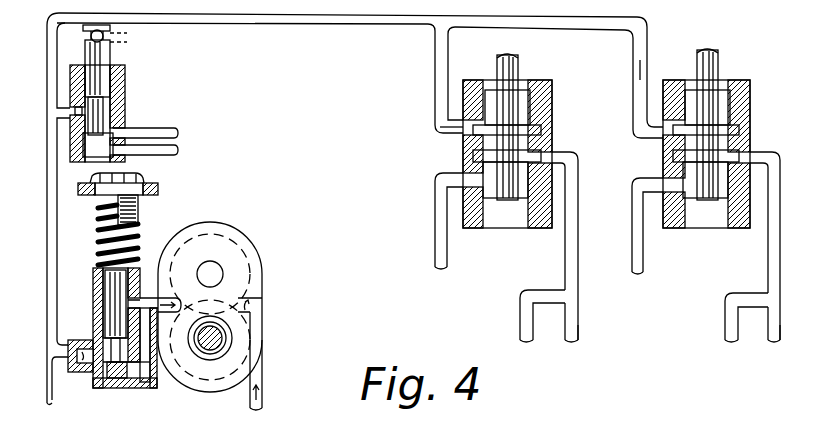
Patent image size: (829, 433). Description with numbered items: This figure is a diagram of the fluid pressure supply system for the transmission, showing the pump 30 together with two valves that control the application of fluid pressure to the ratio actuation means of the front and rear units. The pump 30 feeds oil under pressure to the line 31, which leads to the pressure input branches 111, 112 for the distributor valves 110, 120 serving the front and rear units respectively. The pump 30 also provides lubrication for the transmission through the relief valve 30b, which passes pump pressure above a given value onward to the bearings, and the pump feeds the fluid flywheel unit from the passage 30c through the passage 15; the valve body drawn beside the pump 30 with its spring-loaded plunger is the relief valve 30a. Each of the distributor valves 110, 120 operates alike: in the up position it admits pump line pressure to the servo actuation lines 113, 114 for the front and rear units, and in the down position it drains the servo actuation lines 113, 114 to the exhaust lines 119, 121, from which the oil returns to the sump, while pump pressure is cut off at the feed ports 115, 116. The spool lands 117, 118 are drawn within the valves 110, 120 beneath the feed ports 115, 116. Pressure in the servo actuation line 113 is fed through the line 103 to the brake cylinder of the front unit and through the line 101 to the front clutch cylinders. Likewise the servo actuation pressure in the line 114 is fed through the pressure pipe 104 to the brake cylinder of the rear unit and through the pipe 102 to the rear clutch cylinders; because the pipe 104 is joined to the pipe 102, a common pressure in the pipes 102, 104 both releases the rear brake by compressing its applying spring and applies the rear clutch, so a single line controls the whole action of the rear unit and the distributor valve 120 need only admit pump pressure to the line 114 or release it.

The line 31 is at (281, 25).
The pump 30 is at (263, 273).
The relief valve body 30a is at (95, 285).
The relief valve 30b is at (88, 327).
The passage 30c is at (157, 340).
The passage 15 is at (143, 384).
The distributor valve 110 is at (518, 97).
The distributor valve 120 is at (718, 97).
The pressure input branch 111 is at (441, 99).
The pressure input branch 112 is at (632, 69).
The servo actuation line 113 is at (566, 260).
The servo actuation line 114 is at (767, 265).
The feed port 115 is at (538, 132).
The feed port 116 is at (737, 133).
The valve spool land 117 is at (532, 153).
The valve spool land 118 is at (737, 153).
The exhaust line 119 is at (436, 228).
The exhaust line 121 is at (660, 180).
The line 101 is at (522, 317).
The pipe 102 is at (724, 322).
The line 103 is at (580, 331).
The pressure pipe 104 is at (767, 335).